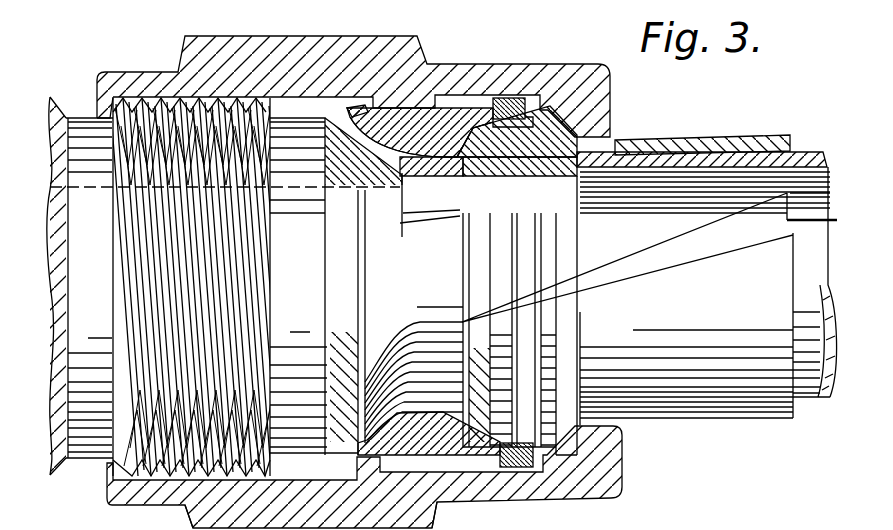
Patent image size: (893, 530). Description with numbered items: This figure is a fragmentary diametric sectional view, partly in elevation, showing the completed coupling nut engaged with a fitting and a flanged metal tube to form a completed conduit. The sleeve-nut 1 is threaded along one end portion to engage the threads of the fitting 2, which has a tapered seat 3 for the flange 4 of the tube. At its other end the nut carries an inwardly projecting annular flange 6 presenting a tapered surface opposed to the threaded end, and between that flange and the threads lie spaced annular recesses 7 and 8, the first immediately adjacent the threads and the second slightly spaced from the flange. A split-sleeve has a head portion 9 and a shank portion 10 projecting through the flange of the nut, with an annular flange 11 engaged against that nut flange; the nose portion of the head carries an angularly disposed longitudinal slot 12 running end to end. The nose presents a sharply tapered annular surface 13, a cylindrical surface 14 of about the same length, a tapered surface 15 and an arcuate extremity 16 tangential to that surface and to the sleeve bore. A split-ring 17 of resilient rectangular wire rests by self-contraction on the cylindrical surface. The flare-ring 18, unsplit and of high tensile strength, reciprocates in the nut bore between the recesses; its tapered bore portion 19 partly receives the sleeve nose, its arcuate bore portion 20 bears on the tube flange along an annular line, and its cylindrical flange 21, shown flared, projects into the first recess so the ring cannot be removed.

The sleeve-nut 1 is at (182, 50).
The fitting 2 is at (107, 445).
The tapered seat 3 is at (340, 140).
The flange 4 is at (370, 143).
The annular flange 6 is at (610, 110).
The annular recess 7 is at (300, 100).
The annular recess 8 is at (440, 148).
The head portion 9 is at (493, 162).
The shank portion 10 is at (645, 147).
The annular flange 11 is at (558, 145).
The longitudinal slot 12 is at (327, 516).
The tapered annular surface 13 is at (558, 112).
The cylindrical surface 14 is at (528, 122).
The tapered surface 15 is at (473, 142).
The arcuate extremity 16 is at (457, 160).
The split-ring 17 is at (508, 100).
The flare-ring 18 is at (408, 120).
The tapered bore portion 19 is at (468, 125).
The bore portion 20 is at (410, 157).
The cylindrical flange 21 is at (348, 103).